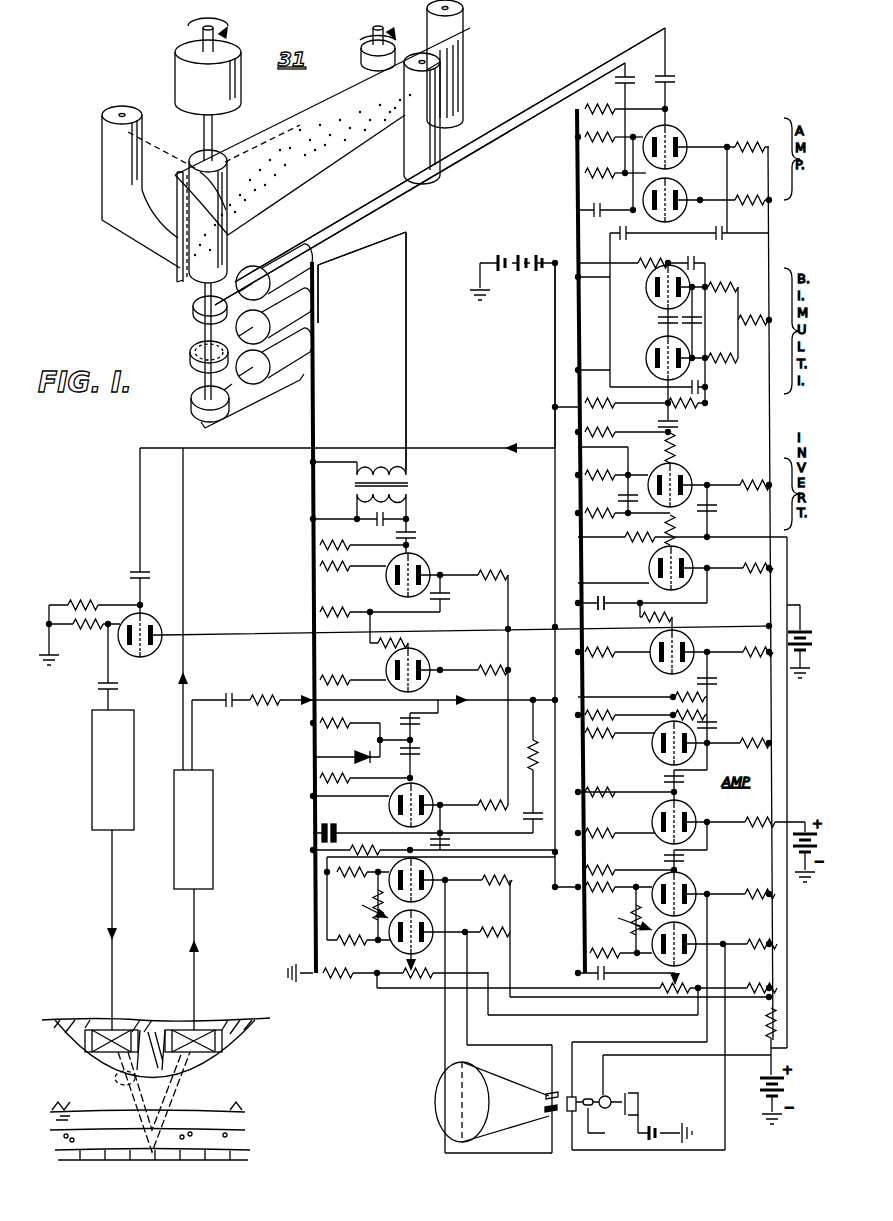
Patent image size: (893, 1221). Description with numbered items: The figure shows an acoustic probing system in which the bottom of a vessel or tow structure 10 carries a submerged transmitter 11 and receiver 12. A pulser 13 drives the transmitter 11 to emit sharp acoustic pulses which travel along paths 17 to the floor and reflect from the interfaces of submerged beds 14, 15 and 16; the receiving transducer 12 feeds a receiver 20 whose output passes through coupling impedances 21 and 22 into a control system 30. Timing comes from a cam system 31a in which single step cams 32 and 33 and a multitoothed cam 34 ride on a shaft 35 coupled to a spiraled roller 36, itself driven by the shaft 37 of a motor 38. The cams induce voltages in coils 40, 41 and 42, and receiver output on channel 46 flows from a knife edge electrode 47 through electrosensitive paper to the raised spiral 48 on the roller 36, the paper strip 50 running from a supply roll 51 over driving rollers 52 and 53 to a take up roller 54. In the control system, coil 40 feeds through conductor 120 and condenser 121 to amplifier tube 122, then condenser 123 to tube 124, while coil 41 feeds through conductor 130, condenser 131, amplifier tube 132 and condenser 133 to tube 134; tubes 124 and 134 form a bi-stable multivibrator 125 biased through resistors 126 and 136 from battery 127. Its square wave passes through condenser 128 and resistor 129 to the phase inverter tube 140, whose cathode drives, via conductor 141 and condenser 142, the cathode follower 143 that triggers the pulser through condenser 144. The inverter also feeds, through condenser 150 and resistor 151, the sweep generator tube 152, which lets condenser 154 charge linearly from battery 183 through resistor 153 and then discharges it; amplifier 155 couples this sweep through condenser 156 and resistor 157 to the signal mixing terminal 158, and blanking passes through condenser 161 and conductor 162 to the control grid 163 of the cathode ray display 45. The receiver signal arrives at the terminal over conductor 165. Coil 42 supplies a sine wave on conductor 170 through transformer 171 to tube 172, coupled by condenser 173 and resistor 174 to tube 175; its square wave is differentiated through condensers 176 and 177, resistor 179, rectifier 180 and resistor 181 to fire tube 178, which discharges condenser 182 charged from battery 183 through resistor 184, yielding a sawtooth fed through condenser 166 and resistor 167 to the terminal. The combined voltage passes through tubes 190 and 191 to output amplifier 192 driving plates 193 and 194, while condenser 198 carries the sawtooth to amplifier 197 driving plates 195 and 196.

The vessel or tow structure 10 is at (245, 1030).
The transmitter 11 is at (96, 1052).
The receiver 12 is at (205, 1052).
The pulser 13 is at (92, 770).
The submerged bed 14 is at (196, 1124).
The submerged bed 15 is at (196, 1142).
The submerged bed 16 is at (196, 1166).
The paths 17 is at (114, 1082).
The receiver 20 is at (213, 808).
The coupling impedance (condenser) 21 is at (228, 710).
The coupling impedance (resistor) 22 is at (262, 705).
The control system 30 is at (506, 355).
The cam system 31a is at (252, 401).
The single step cam 32 is at (191, 402).
The single step cam 33 is at (193, 312).
The multitoothed cam 34 is at (190, 356).
The shaft 35 is at (205, 290).
The spiraled roller 36 is at (220, 158).
The shaft 37 is at (213, 136).
The motor 38 is at (230, 86).
The coil 40 is at (274, 272).
The coil 41 is at (274, 356).
The coil 42 is at (274, 316).
The cathode ray display 45 is at (492, 1095).
The channel 46 is at (181, 731).
The knife edge electrode 47 is at (176, 268).
The raised spiral 48 is at (210, 180).
The electrosensitive paper strip 50 is at (335, 118).
The supply roll 51 is at (128, 105).
The driving roller 52 is at (361, 48).
The driving roller 53 is at (414, 70).
The take up roller 54 is at (455, 10).
The conductor 120 is at (528, 112).
The condenser 121 is at (676, 80).
The amplifier tube 122 is at (676, 138).
The condenser 123 is at (724, 238).
The tube 124 is at (650, 300).
The bi-stable multivibrator 125 is at (737, 313).
The resistor 126 is at (640, 263).
The battery 127 is at (534, 270).
The condenser 128 is at (678, 428).
The resistor 129 is at (676, 448).
The conductor 130 is at (490, 150).
The condenser 131 is at (620, 85).
The amplifier tube 132 is at (676, 190).
The condenser 133 is at (628, 236).
The tube 134 is at (650, 362).
The resistor 136 is at (622, 426).
The phase inverter tube 140 is at (686, 478).
The conductor 141 is at (483, 448).
The condenser 142 is at (128, 572).
The cathode follower stage 143 is at (146, 650).
The condenser 144 is at (98, 688).
The condenser 150 is at (617, 498).
The resistor 151 is at (662, 524).
The tube 152 is at (685, 566).
The resistor 153 is at (752, 573).
The condenser 154 is at (606, 600).
The amplifier 155 is at (652, 657).
The condenser 156 is at (716, 680).
The resistor 157 is at (658, 697).
The signal mixing terminal 158 is at (670, 696).
The condenser 161 is at (717, 509).
The conductor 162 is at (787, 580).
The control grid 163 is at (610, 1096).
The conductor 165 is at (435, 707).
The condenser 166 is at (530, 825).
The resistor 167 is at (524, 760).
The conductor 170 is at (368, 250).
The transformer 171 is at (412, 489).
The tube 172 is at (422, 568).
The condenser 173 is at (450, 596).
The resistor 174 is at (410, 642).
The tube 175 is at (428, 670).
The condenser 176 is at (420, 722).
The condenser 177 is at (420, 752).
The tube 178 is at (424, 800).
The resistor 179 is at (350, 719).
The rectifier 180 is at (355, 754).
The resistor 181 is at (316, 778).
The condenser 182 is at (340, 832).
The battery 183 is at (812, 616).
The resistor 184 is at (492, 800).
The tube 190 is at (654, 752).
The tube 191 is at (690, 816).
The output amplifier 192 is at (699, 941).
The deflection plate 193 is at (575, 1095).
The deflection plate 194 is at (588, 1120).
The deflection plate 195 is at (544, 1096).
The deflection plate 196 is at (548, 1113).
The output amplifier 197 is at (439, 1005).
The condenser 198 is at (448, 845).